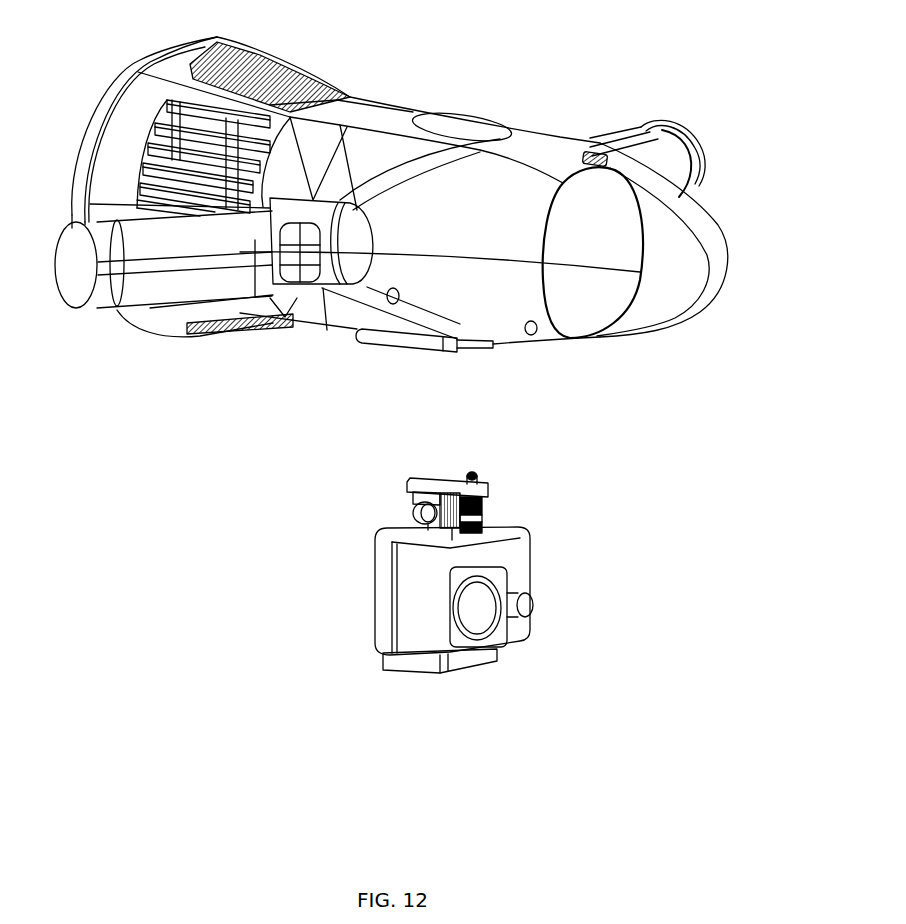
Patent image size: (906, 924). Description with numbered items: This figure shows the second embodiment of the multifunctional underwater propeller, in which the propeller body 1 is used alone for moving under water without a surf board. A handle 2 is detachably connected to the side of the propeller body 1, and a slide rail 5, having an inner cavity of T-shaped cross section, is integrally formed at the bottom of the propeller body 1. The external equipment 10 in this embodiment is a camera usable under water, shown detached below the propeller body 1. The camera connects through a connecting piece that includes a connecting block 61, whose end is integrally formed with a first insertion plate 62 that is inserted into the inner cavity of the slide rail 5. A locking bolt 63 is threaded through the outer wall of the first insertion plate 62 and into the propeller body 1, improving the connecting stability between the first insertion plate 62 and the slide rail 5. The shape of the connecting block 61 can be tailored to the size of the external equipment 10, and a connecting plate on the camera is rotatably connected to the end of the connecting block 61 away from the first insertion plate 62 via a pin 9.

The propeller body 1 is at (403, 112).
The handle 2 is at (672, 147).
The slide rail 5 is at (393, 342).
The mounting column 9 is at (445, 540).
The external equipment 10 is at (420, 630).
The connecting block 61 is at (417, 498).
The first insertion plate 62 is at (483, 484).
The locking bolt 63 is at (484, 513).